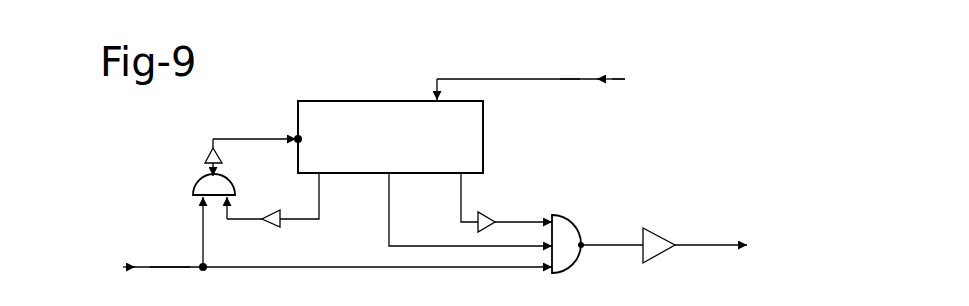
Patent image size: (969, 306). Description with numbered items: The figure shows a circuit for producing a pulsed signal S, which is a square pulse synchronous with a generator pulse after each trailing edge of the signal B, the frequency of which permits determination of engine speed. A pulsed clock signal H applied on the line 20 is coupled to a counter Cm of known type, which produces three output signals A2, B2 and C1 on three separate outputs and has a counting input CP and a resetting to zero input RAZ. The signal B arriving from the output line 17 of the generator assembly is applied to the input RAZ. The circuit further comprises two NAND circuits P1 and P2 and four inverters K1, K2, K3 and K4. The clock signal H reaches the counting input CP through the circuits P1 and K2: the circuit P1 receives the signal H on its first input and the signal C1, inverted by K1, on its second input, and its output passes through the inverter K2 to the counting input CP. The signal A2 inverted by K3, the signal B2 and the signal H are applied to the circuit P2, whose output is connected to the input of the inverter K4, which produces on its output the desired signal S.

The counter Cm is at (355, 118).
The output signal C1 is at (306, 185).
The output signal B2 is at (468, 198).
The output signal A2 is at (462, 186).
The counting input CP is at (293, 134).
The inverter K2 is at (208, 152).
The NAND circuit P1 is at (207, 187).
The inverter K1 is at (272, 225).
The pulsed clock signal H is at (324, 258).
The line 20 is at (170, 270).
The inverter K3 is at (488, 218).
The NAND circuit P2 is at (567, 228).
The inverter K4 is at (660, 247).
The pulsed signal S is at (711, 234).
The resetting to zero input RAZ is at (452, 77).
The signal B is at (572, 65).
The output line 17 is at (625, 79).